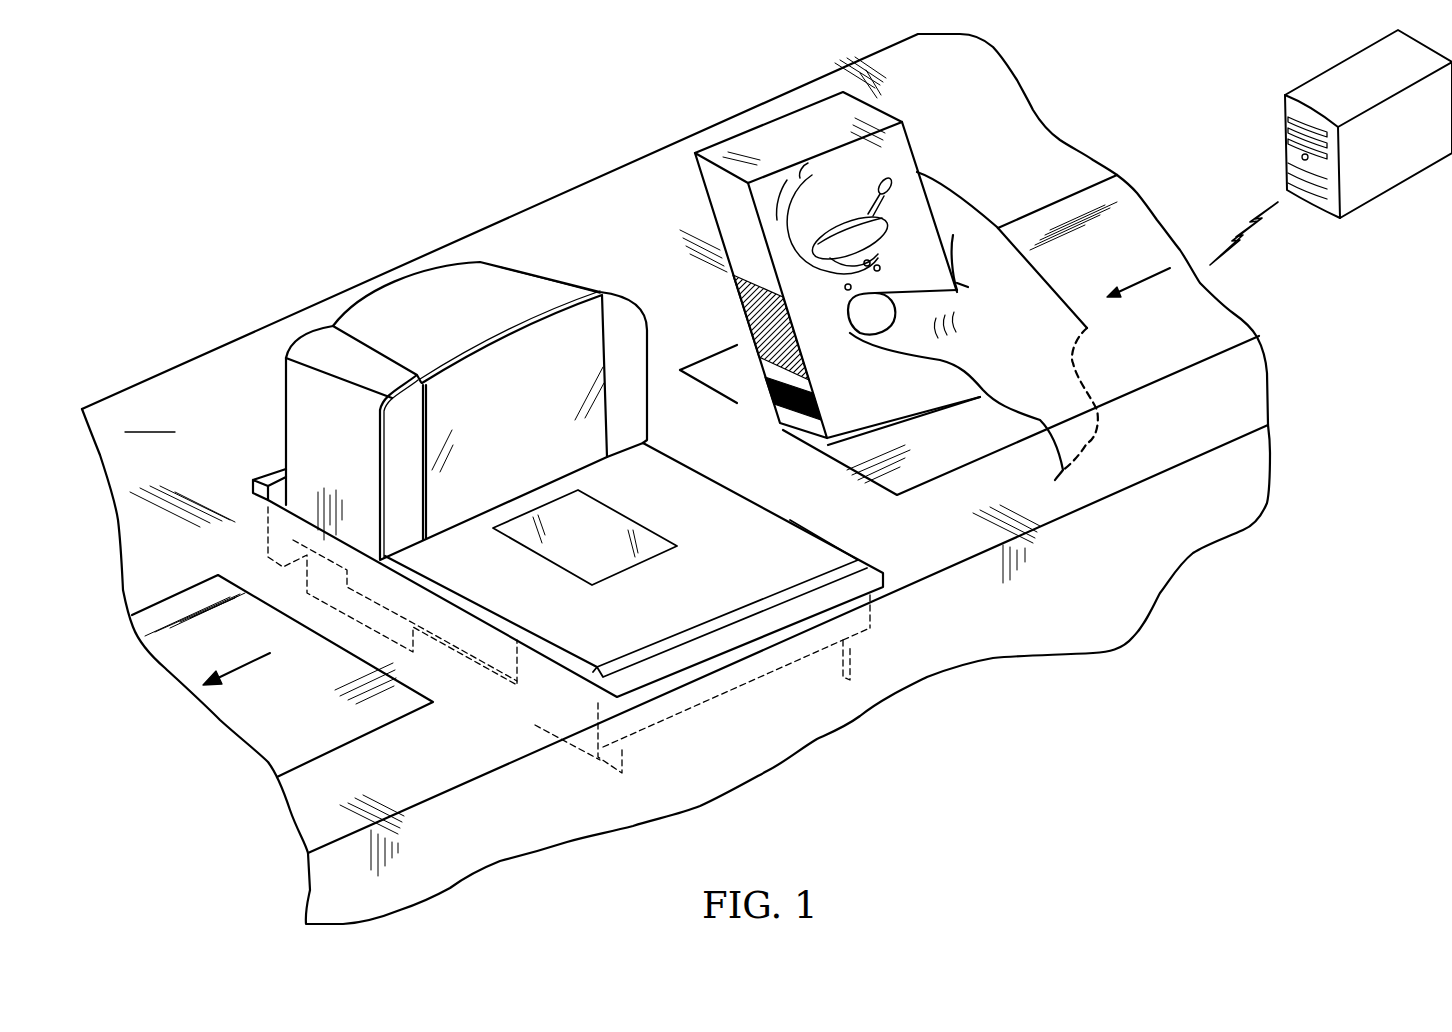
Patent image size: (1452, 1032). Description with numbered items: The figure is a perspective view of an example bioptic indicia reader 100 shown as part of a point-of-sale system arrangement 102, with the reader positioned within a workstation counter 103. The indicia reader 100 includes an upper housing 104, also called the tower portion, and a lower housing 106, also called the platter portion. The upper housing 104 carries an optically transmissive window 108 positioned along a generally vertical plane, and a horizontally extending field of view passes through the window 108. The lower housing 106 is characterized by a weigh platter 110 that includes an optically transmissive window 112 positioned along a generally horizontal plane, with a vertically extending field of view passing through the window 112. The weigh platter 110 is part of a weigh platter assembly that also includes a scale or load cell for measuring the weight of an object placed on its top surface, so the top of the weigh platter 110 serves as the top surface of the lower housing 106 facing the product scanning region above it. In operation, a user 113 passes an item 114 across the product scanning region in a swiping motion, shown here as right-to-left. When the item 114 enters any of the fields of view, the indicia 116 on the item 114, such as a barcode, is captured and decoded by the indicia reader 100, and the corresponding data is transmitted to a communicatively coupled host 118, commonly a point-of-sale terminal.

The bioptic indicia reader 100 is at (333, 263).
The point-of-sale (POS) system arrangement 102 is at (676, 479).
The workstation counter 103 is at (550, 165).
The upper housing 104 is at (466, 387).
The lower housing 106 is at (568, 608).
The optically transmissive window 108 is at (500, 392).
The weigh platter 110 is at (668, 583).
The optically transmissive window 112 is at (562, 538).
The user 113 is at (1052, 318).
The item 114 is at (795, 245).
The indicia 116 is at (820, 405).
The host 118 is at (1283, 142).